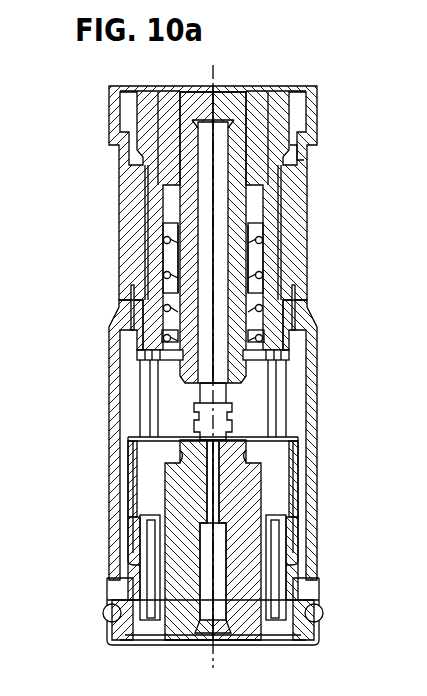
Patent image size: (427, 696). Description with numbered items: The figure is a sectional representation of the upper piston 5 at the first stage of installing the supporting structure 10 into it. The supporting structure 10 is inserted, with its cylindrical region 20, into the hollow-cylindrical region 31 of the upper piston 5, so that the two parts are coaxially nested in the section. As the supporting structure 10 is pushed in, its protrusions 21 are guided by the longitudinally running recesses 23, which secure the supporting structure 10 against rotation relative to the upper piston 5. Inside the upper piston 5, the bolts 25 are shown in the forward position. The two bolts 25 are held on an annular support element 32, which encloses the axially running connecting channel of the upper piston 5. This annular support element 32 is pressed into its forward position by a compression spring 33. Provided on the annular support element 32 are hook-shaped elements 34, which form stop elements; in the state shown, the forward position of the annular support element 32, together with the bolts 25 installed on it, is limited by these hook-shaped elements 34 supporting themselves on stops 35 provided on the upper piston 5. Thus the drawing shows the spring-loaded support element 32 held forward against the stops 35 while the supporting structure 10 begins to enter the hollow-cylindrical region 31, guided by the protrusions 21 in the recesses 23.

The upper piston 5 is at (297, 215).
The stops 35 is at (300, 178).
The hook-shaped elements 34 is at (285, 240).
The annular support element 32 is at (283, 300).
The compression spring 33 is at (157, 270).
The hollow-cylindrical region 31 is at (120, 378).
The bolts 25 is at (222, 392).
The cylindrical region 20 is at (214, 538).
The longitudinally running recesses 23 is at (121, 469).
The protrusions 21 is at (122, 540).
The supporting structure 10 is at (322, 594).